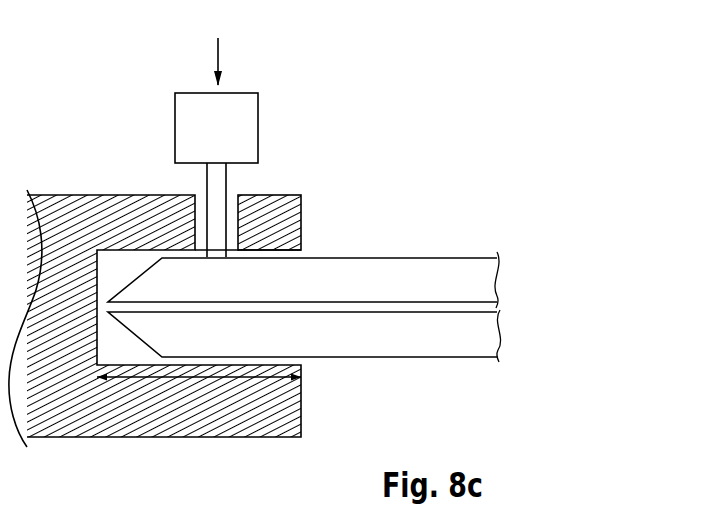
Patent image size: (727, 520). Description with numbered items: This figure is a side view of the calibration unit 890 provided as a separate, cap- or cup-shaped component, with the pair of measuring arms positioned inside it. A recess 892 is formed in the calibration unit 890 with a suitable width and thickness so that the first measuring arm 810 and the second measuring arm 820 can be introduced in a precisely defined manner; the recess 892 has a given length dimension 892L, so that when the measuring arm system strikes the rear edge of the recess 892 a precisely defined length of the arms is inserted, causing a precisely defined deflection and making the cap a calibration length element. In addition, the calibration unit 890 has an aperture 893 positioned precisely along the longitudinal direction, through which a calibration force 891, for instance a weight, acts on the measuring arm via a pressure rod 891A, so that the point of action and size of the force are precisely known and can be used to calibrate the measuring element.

The calibration unit 890 is at (361, 141).
The calibration force 891 is at (185, 92).
The pressure rod 891A is at (203, 188).
The aperture 893 is at (233, 202).
The recess 892 is at (108, 277).
The length dimension 892L is at (203, 380).
The first measuring arm 810 is at (385, 251).
The second measuring arm 820 is at (483, 325).